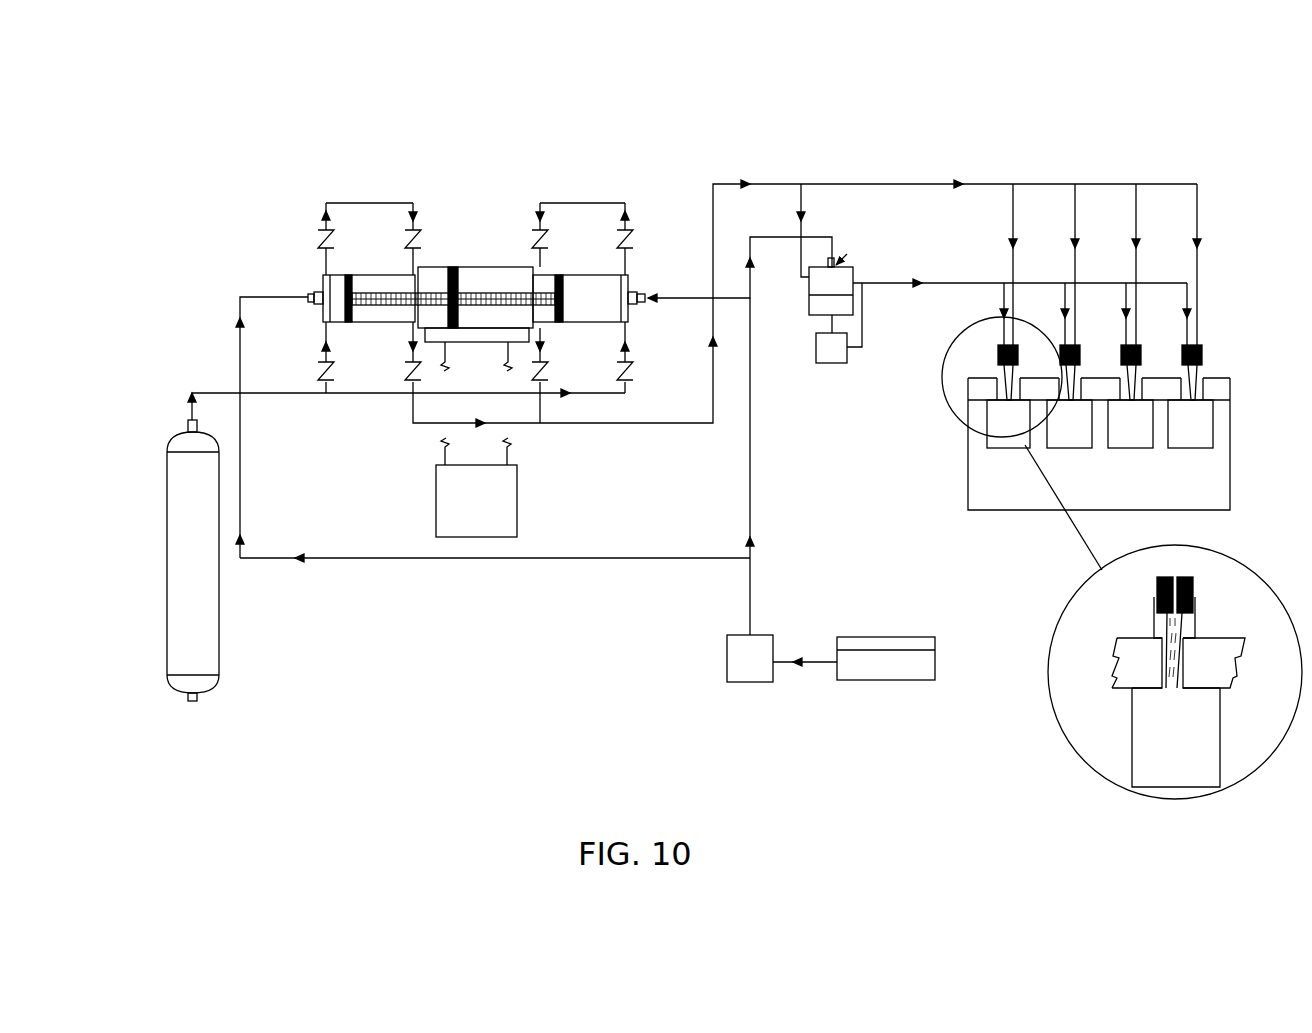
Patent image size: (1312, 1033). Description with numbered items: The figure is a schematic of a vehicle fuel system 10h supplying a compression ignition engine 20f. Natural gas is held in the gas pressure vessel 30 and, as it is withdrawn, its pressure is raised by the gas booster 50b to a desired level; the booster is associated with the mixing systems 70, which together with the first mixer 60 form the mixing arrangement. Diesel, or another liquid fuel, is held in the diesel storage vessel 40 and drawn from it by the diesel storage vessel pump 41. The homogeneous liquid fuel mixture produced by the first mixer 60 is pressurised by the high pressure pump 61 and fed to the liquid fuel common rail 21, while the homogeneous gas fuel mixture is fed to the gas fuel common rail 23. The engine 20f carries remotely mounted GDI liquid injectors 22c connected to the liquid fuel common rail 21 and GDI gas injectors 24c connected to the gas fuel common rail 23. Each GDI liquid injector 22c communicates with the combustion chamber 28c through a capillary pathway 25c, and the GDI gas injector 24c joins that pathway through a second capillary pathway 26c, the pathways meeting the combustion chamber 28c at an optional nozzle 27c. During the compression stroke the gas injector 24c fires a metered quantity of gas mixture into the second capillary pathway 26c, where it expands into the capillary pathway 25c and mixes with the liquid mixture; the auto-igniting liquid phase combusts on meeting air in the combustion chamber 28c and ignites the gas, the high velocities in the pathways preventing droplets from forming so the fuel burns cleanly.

The vehicle fuel system 10h is at (952, 112).
The gas booster 50b is at (372, 240).
The mixing systems 70 is at (312, 292).
The gas pressure vessel 30 is at (178, 613).
The first mixer 60 is at (856, 311).
The high pressure pump 61 is at (834, 370).
The diesel storage vessel pump 41 is at (741, 645).
The diesel storage vessel 40 is at (934, 679).
The gas fuel common rail 23 is at (1105, 255).
The liquid fuel common rail 21 is at (1095, 305).
The compression ignition engine 20f is at (1202, 477).
The GDI liquid injectors 22c is at (1158, 588).
The GDI gas injectors 24c is at (1193, 588).
The capillary pathway 25c is at (1166, 622).
The second capillary pathway 26c is at (1183, 622).
The nozzle 27c is at (1170, 692).
The combustion chamber 28c is at (1184, 738).